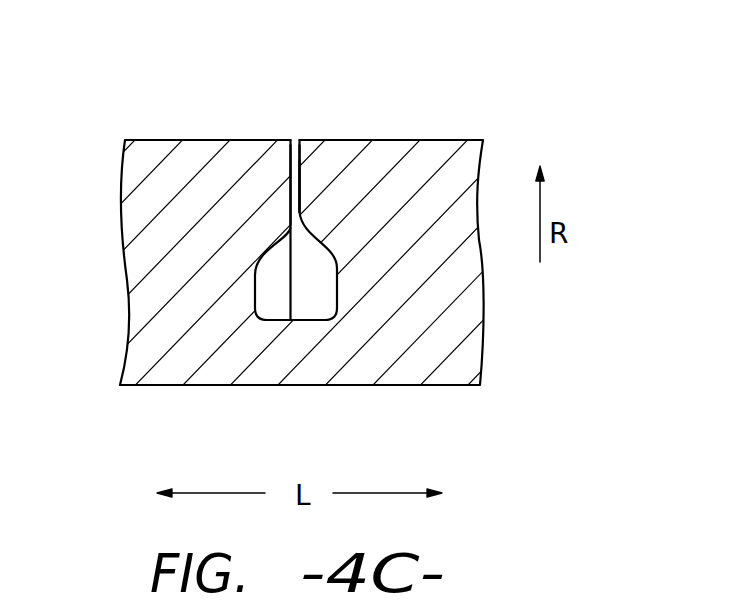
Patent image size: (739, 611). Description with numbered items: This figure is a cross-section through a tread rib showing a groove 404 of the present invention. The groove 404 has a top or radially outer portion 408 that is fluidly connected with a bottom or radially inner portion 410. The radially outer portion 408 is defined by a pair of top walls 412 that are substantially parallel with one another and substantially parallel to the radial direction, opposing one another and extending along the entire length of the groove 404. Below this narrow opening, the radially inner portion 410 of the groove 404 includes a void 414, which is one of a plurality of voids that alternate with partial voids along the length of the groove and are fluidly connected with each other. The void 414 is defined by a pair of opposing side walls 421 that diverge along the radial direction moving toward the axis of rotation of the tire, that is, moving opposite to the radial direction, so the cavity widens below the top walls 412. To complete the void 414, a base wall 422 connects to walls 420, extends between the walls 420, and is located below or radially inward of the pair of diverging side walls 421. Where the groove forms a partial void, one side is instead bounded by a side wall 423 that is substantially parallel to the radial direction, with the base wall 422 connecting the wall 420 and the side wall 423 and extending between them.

The groove 404 is at (296, 122).
The top walls 412 is at (289, 163).
The radially outer portion 408 is at (310, 198).
The diverging side walls 421 is at (318, 233).
The void 414 is at (263, 247).
The side wall 423 is at (245, 288).
The radially inner portion 410 is at (347, 255).
The walls 420 is at (233, 292).
The base wall 422 is at (272, 326).